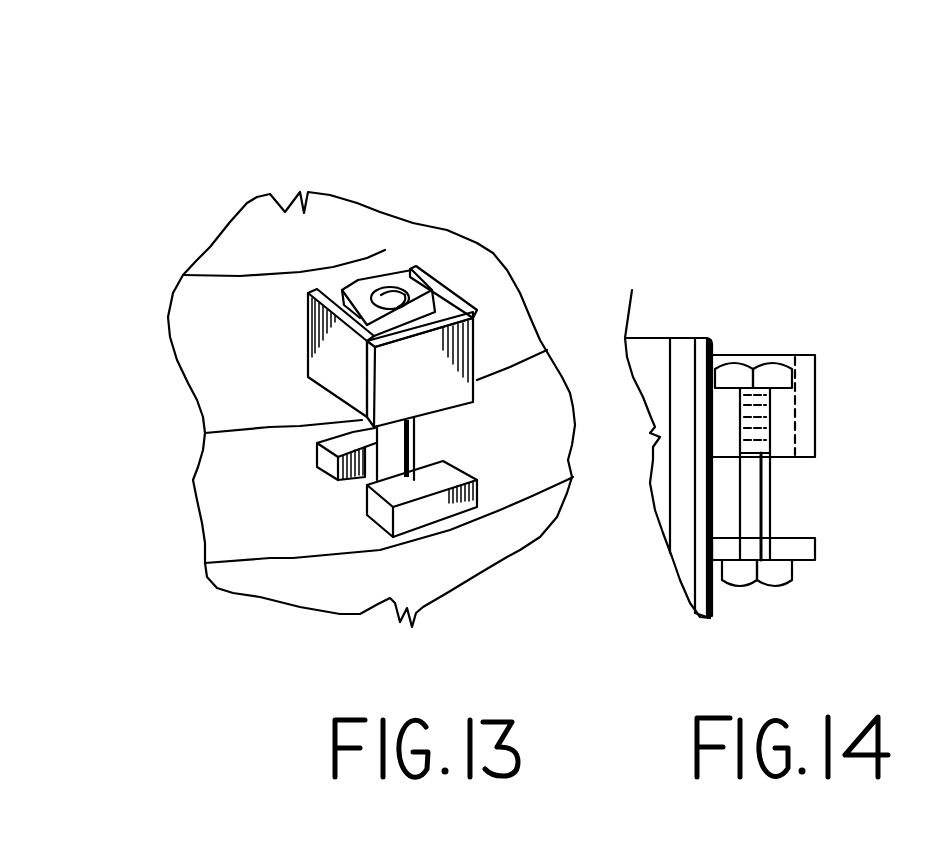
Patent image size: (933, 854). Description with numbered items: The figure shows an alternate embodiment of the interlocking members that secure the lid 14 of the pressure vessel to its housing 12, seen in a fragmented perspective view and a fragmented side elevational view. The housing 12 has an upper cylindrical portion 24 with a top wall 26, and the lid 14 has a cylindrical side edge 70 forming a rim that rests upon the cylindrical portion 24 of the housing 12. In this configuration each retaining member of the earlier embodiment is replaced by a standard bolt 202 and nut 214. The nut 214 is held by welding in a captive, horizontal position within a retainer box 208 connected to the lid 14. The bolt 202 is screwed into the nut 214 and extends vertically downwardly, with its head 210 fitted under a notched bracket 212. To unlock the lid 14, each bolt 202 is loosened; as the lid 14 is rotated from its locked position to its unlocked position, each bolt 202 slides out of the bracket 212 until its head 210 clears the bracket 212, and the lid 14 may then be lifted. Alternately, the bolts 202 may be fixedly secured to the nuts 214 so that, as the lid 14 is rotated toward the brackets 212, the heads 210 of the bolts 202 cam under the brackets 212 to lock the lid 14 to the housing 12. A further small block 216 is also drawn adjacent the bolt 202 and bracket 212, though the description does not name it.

In FIG. 13, the housing 12 is at (320, 603).
In FIG. 13, the lid 14 is at (342, 205).
In FIG. 14, the lid 14 is at (651, 306).
In FIG. 13, the upper cylindrical portion 24 is at (217, 533).
In FIG. 14, the upper cylindrical portion 24 is at (686, 549).
In FIG. 13, the top wall 26 is at (255, 435).
In FIG. 13, the cylindrical side edge 70 is at (475, 260).
In FIG. 14, the cylindrical side edge 70 is at (680, 432).
In FIG. 13, the bolt 202 is at (392, 446).
In FIG. 14, the bolt 202 is at (753, 500).
In FIG. 13, the retainer box 208 is at (460, 398).
In FIG. 14, the retainer box 208 is at (805, 393).
In FIG. 13, the head 210 is at (367, 488).
In FIG. 14, the head 210 is at (782, 577).
In FIG. 13, the notched bracket 212 is at (442, 465).
In FIG. 14, the notched bracket 212 is at (807, 547).
In FIG. 13, the nut 214 is at (367, 285).
In FIG. 14, the nut 214 is at (771, 370).
In FIG. 13, the spacer block 216 is at (363, 478).